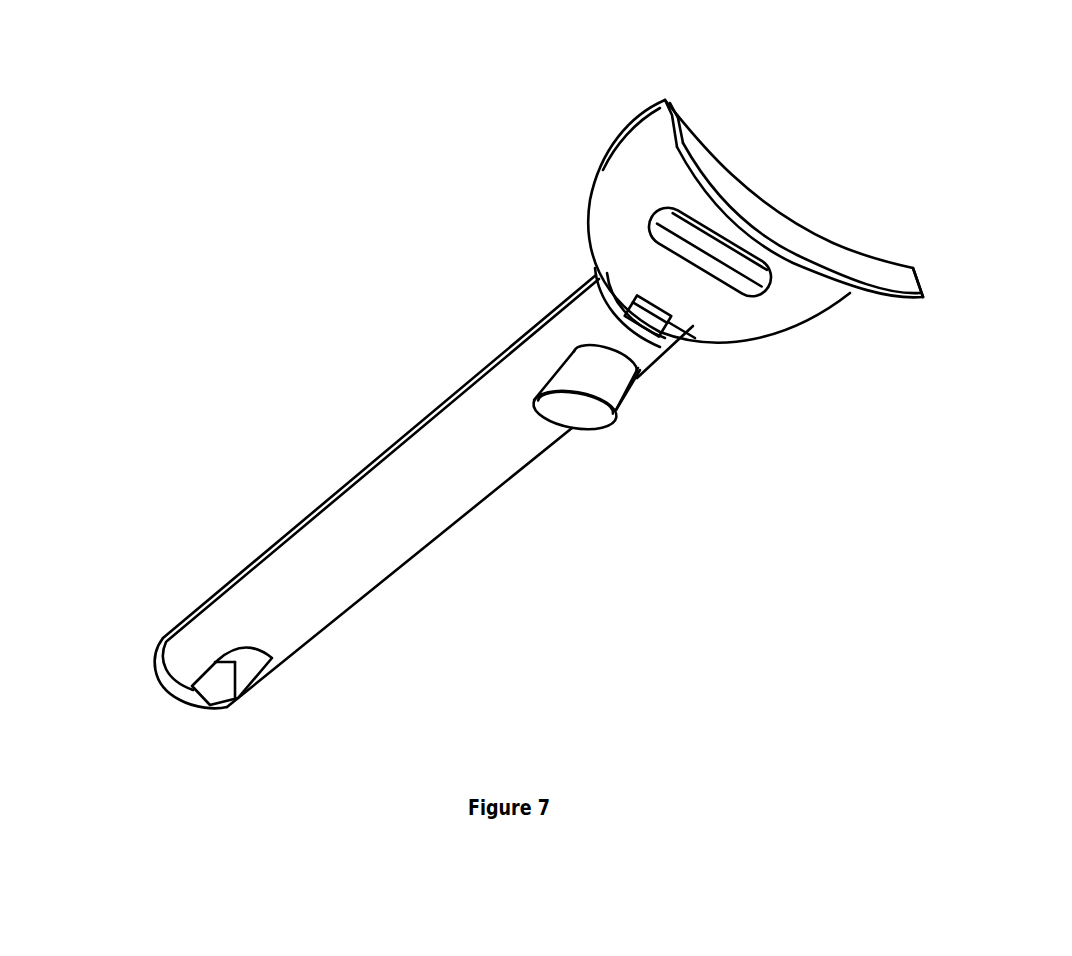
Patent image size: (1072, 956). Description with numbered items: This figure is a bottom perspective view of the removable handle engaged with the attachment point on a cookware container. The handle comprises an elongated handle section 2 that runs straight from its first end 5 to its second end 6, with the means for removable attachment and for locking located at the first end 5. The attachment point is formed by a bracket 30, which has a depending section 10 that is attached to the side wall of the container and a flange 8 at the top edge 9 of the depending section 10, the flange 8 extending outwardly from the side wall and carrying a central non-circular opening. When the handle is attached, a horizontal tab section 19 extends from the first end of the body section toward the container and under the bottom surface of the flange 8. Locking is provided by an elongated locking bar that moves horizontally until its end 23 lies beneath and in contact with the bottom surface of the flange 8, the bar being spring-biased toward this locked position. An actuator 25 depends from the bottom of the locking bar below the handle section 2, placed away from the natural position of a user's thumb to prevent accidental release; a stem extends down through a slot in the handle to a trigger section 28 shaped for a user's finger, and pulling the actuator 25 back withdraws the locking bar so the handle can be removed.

The elongated handle section 2 is at (357, 522).
The first end 5 is at (582, 305).
The second end 6 is at (195, 642).
The flange 8 is at (587, 163).
The top edge 9 is at (668, 103).
The depending section 10 is at (892, 279).
The horizontal tab section 19 is at (760, 265).
The end of the locking bar 23 is at (646, 306).
The actuator 25 is at (597, 432).
The trigger section 28 is at (623, 378).
The bracket 30 is at (803, 213).